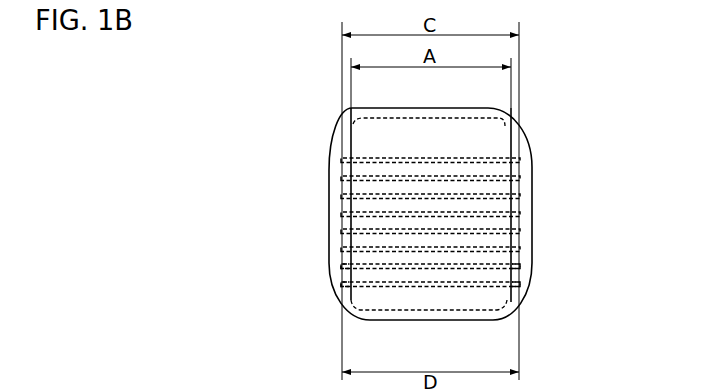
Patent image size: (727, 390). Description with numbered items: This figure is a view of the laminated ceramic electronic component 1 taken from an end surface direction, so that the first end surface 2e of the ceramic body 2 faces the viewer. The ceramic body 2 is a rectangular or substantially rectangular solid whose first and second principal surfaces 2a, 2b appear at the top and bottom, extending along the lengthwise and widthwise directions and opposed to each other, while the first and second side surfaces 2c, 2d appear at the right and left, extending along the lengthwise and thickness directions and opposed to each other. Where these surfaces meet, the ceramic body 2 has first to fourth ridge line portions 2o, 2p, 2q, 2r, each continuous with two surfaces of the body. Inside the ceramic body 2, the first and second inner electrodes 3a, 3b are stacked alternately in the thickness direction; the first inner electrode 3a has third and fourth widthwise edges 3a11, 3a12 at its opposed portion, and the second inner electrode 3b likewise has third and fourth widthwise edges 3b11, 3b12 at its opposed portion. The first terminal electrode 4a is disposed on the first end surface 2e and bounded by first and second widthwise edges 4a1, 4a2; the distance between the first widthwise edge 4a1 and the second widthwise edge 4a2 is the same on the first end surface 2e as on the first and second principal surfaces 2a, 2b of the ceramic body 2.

The laminated ceramic electronic component 1 is at (285, 55).
The ceramic body 2 is at (531, 146).
The first principal surface 2a is at (412, 119).
The second principal surface 2b is at (430, 314).
The first side surface 2c is at (533, 188).
The second side surface 2d is at (329, 184).
The first end surface 2e is at (448, 137).
The first ridge line portion 2o is at (503, 127).
The second ridge line portion 2p is at (360, 126).
The third ridge line portion 2q is at (502, 316).
The fourth ridge line portion 2r is at (357, 318).
The first inner electrode 3a is at (363, 162).
The second inner electrode 3b is at (492, 246).
The third widthwise edge 3a11 is at (521, 264).
The fourth widthwise edge 3a12 is at (339, 267).
The third widthwise edge 3b11 is at (523, 282).
The fourth widthwise edge 3b12 is at (340, 282).
The first terminal electrode 4a is at (517, 170).
The first widthwise edge 4a1 is at (514, 203).
The second widthwise edge 4a2 is at (341, 202).